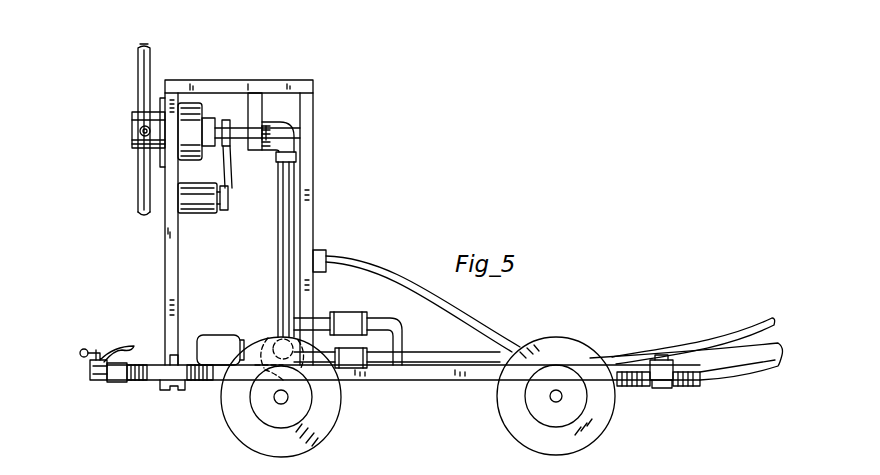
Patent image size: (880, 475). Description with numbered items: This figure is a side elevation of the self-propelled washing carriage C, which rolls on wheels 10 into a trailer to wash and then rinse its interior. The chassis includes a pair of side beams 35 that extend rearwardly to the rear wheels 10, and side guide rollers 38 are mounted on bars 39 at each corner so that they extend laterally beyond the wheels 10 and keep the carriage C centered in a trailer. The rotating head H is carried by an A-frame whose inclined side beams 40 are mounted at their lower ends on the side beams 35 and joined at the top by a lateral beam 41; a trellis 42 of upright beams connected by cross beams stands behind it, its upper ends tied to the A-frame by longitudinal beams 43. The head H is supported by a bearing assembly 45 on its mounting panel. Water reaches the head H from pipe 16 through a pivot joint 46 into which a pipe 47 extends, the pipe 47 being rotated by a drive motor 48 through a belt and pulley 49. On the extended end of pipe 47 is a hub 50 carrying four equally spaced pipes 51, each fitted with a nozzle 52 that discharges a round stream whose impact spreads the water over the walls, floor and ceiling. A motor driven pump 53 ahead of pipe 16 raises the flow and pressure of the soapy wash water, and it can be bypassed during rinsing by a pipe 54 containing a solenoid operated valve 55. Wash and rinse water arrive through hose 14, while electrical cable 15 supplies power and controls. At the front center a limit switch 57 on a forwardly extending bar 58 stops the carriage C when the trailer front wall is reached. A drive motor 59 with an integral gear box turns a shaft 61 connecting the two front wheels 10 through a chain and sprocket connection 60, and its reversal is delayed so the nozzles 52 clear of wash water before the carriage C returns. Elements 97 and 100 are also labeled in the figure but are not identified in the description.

The wheels 10 is at (250, 432).
The hose 14 is at (768, 356).
The electrical cable 15 is at (480, 312).
The pipe 16 is at (278, 268).
The side beams 35 is at (418, 380).
The side guide rollers 38 is at (152, 385).
The bars 39 is at (184, 394).
The side beams 40 is at (164, 233).
The lateral beam 41 is at (168, 84).
The trellis 42 is at (312, 166).
The longitudinal beams 43 is at (288, 82).
The bearing assembly 45 is at (190, 110).
The pivot joint 46 is at (303, 131).
The pipe 47 is at (237, 136).
The drive motor 48 is at (202, 212).
The belt and pulley 49 is at (229, 174).
The hub 50 is at (132, 140).
The pipes 51 is at (138, 70).
The nozzle 52 is at (140, 52).
The motor driven pump 53 is at (351, 368).
The pipe 54 is at (385, 320).
The solenoid operated valve 55 is at (340, 312).
The limit switch 57 is at (90, 366).
The bar 58 is at (117, 380).
The drive motor 59 is at (212, 342).
The chain and sprocket connection 60 is at (252, 330).
The shaft 61 is at (283, 398).
The hose fitting 97 is at (316, 250).
The hook 100 is at (130, 334).
The rotating head H is at (130, 124).
The carriage C is at (154, 260).